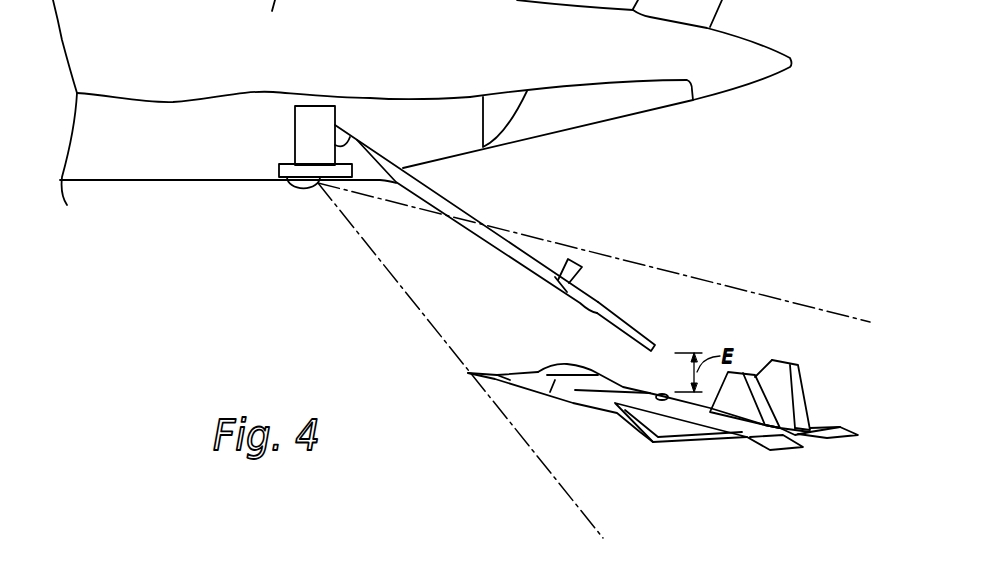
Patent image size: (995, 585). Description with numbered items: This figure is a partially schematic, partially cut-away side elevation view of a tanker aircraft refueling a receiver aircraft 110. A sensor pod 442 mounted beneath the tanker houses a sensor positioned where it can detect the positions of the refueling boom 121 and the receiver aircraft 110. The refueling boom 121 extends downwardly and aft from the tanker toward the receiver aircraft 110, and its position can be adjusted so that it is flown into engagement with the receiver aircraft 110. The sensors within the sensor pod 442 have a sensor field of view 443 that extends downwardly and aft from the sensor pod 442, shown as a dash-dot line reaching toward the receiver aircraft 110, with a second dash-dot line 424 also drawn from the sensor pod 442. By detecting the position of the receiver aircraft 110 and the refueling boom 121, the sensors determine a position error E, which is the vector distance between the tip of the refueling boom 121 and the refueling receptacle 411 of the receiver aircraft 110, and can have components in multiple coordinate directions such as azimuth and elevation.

The sensor pod 442 is at (303, 183).
The sensor line of sight 424 is at (367, 195).
The sensor field of view 443 is at (430, 330).
The refueling boom 121 is at (453, 202).
The refueling receptacle 411 is at (660, 393).
The receiver aircraft 110 is at (617, 417).